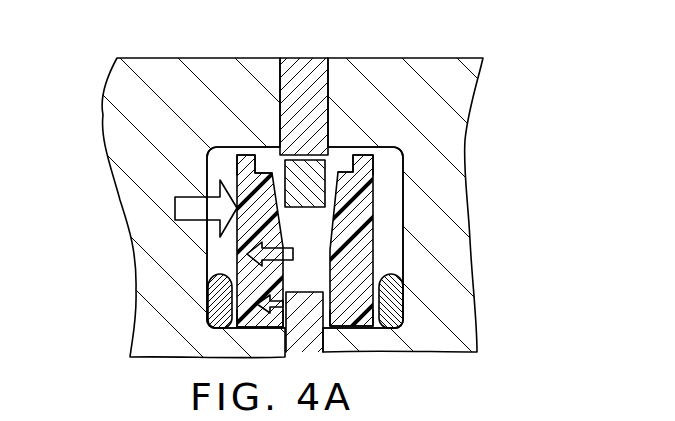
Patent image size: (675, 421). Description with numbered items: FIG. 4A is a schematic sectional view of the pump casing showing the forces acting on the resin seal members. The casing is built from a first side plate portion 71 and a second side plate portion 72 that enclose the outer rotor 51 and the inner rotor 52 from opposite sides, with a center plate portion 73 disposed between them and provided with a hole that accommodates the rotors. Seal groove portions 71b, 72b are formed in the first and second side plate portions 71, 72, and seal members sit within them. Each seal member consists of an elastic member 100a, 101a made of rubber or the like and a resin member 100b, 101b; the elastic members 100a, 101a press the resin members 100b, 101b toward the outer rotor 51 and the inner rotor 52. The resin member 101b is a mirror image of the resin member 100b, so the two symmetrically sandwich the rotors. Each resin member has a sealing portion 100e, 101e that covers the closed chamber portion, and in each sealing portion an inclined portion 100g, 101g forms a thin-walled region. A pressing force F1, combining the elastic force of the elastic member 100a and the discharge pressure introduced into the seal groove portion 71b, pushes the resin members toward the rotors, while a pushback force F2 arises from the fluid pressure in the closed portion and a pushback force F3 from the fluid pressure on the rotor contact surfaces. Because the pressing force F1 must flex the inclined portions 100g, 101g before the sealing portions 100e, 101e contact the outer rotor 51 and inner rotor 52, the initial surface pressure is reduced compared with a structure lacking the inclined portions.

The first side plate portion 71 is at (337, 210).
The second side plate portion 72 is at (337, 210).
The center plate portion 73 is at (306, 57).
The outer rotor 51 is at (308, 165).
The inner rotor 52 is at (312, 355).
The seal groove portion 71b is at (212, 152).
The seal groove portion 72b is at (415, 150).
The inclined portion 100g is at (245, 180).
The sealing portion 100e is at (327, 210).
The elastic member 100a is at (212, 298).
The resin member 100b is at (258, 326).
The inclined portion 101g is at (350, 186).
The sealing portion 101e is at (372, 210).
The elastic member 101a is at (398, 290).
The resin member 101b is at (367, 322).
The pressing force F1 is at (176, 221).
The pushback force F2 is at (288, 248).
The pushback force F3 is at (284, 300).